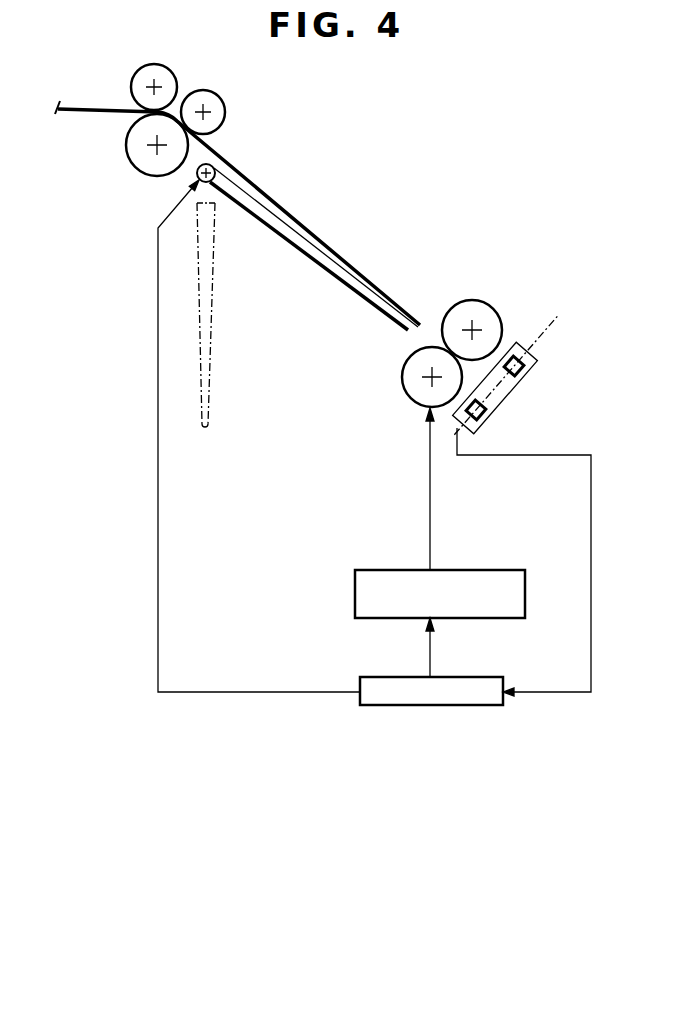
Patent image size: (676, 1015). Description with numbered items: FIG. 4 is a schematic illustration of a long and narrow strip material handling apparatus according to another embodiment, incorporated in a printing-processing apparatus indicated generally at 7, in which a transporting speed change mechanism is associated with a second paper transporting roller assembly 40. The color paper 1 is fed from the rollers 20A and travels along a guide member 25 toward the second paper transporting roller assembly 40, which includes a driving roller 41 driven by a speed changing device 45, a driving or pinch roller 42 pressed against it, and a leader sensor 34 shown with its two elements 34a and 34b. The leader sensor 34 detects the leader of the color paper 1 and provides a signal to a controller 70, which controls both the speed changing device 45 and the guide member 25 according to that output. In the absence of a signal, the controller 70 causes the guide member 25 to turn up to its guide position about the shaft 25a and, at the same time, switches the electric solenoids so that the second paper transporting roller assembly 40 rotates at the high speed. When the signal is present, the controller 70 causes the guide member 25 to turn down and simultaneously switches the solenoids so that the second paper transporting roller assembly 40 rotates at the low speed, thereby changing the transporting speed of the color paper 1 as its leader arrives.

The color paper 1 is at (249, 170).
The printing unit 7 is at (328, 180).
The feed roller pair 20A is at (128, 157).
The guide member 25 is at (294, 250).
The shaft 25a is at (197, 175).
The second paper transporting roller assembly 40 is at (436, 320).
The driving roller 41 is at (402, 378).
The pinch roller 42 is at (485, 315).
The leader sensor 34 is at (517, 495).
The light emitting element 34a is at (522, 371).
The light receiving element 34b is at (487, 413).
The speed changing device 45 is at (473, 570).
The controller 70 is at (475, 677).